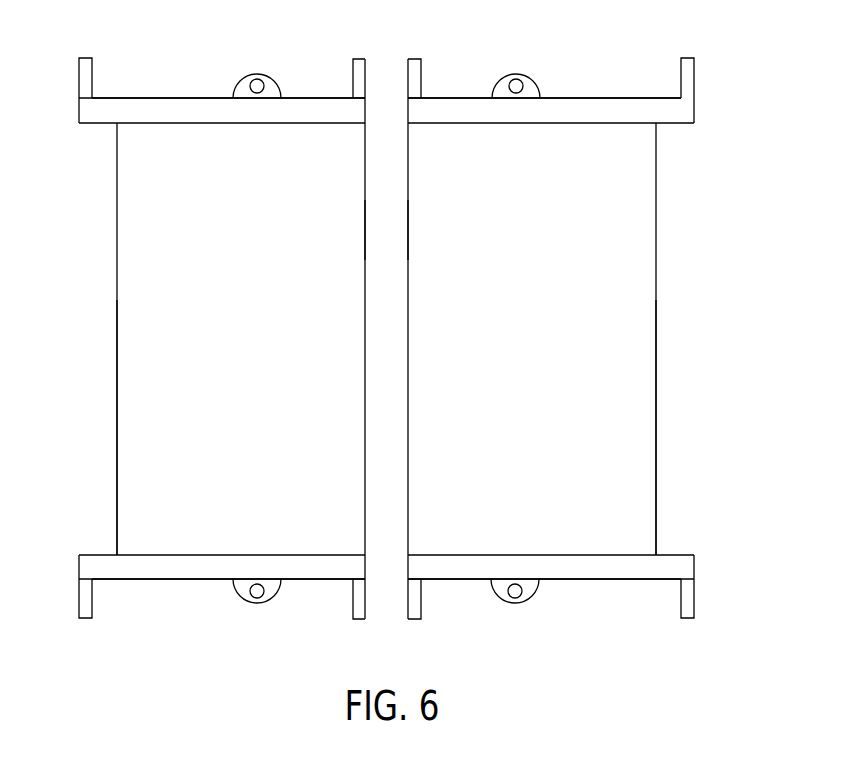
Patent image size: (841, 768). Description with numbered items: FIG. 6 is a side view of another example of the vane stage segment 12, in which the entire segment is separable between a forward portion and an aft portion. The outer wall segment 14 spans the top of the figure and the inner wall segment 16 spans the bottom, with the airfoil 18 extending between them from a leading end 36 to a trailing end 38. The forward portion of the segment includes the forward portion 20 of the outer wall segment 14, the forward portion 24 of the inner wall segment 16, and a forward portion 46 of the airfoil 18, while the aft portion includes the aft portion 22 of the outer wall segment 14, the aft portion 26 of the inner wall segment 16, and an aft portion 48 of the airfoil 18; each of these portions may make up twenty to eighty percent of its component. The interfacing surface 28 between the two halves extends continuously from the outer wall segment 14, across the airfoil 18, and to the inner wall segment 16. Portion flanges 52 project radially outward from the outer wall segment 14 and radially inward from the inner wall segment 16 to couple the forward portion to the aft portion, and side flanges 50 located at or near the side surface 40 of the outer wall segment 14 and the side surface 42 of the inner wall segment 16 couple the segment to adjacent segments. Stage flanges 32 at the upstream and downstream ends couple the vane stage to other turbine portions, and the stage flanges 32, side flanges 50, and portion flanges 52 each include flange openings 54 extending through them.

The vane stage segment 12 is at (85, 222).
The outer wall segment 14 is at (387, 46).
The inner wall segment 16 is at (387, 619).
The airfoil 18 is at (375, 369).
The forward portion of the outer wall segment 20 is at (620, 97).
The aft portion of the outer wall segment 22 is at (177, 97).
The forward portion of the inner wall segment 24 is at (620, 581).
The aft portion of the inner wall segment 26 is at (158, 581).
The interfacing surface 28 is at (366, 228).
The stage flange 32 is at (76, 75).
The leading end 36 is at (657, 232).
The trailing end 38 is at (117, 258).
The side surface 40 is at (187, 113).
The side surface 42 is at (195, 566).
The forward portion of the airfoil 46 is at (645, 346).
The aft portion of the airfoil 48 is at (128, 382).
The side flange 50 is at (265, 75).
The portion flange 52 is at (366, 77).
The flange opening 54 is at (257, 100).